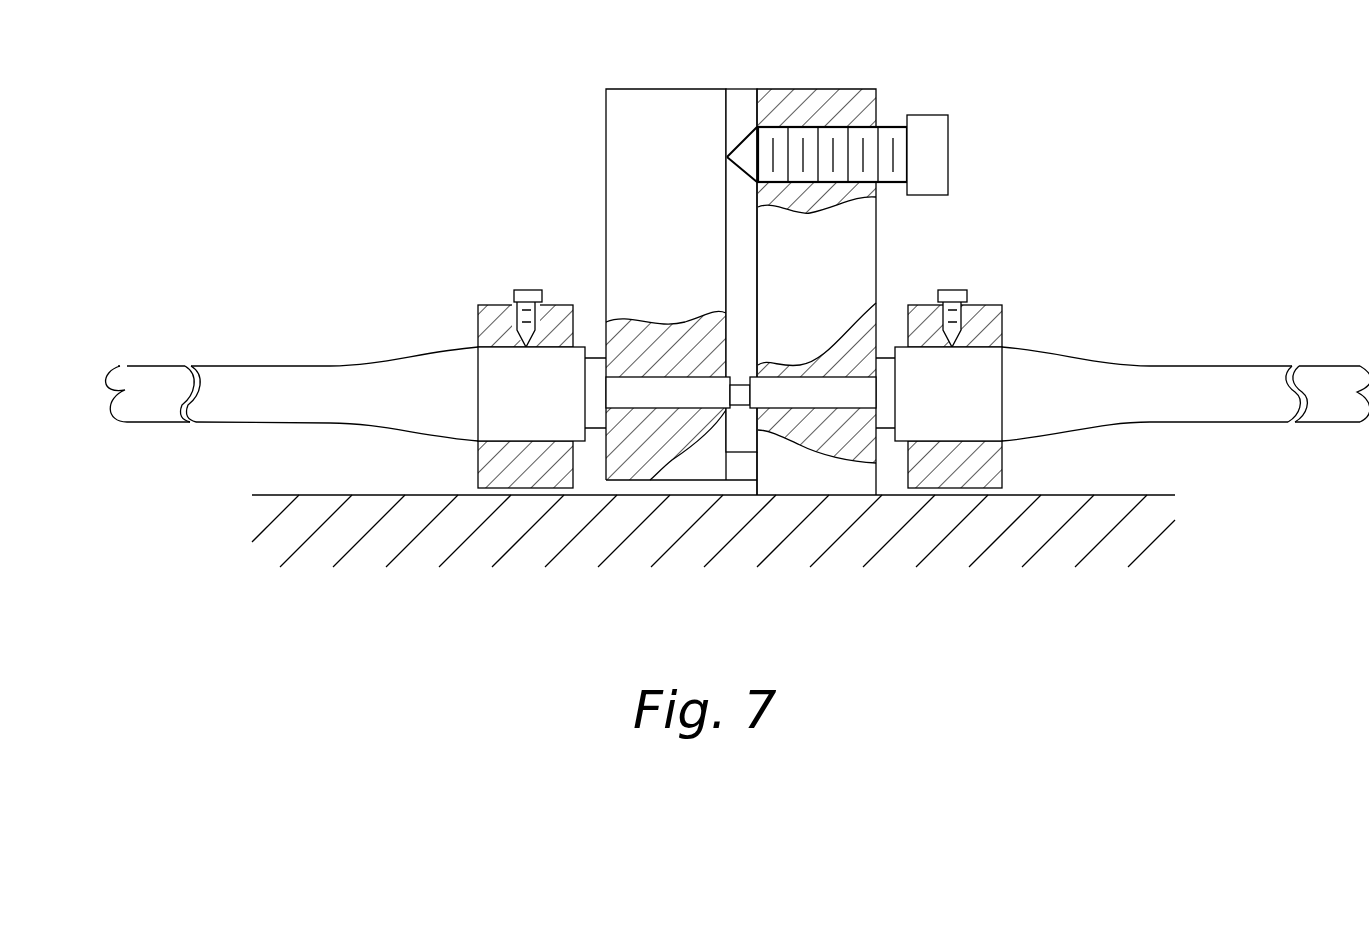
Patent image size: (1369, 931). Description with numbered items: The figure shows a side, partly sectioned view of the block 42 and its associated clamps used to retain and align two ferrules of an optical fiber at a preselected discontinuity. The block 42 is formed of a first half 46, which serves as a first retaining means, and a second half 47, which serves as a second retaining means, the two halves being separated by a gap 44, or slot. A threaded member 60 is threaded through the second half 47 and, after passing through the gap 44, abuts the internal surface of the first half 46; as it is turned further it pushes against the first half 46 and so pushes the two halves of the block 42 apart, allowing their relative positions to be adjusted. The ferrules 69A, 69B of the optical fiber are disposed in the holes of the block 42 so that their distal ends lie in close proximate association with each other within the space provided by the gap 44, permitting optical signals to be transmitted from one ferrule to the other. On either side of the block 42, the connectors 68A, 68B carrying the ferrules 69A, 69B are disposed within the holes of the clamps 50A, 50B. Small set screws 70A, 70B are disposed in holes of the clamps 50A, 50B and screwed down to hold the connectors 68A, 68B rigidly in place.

The block 42 is at (778, 468).
The gap 44 is at (740, 102).
The first half 46 is at (637, 100).
The second half 47 is at (870, 242).
The first clamp 50A is at (492, 307).
The second clamp 50B is at (1002, 316).
The threaded member 60 is at (948, 142).
The first connector 68A is at (490, 420).
The second connector 68B is at (977, 417).
The first ferrule 69A is at (678, 394).
The second ferrule 69B is at (813, 394).
The first set screw 70A is at (528, 290).
The second set screw 70B is at (957, 290).